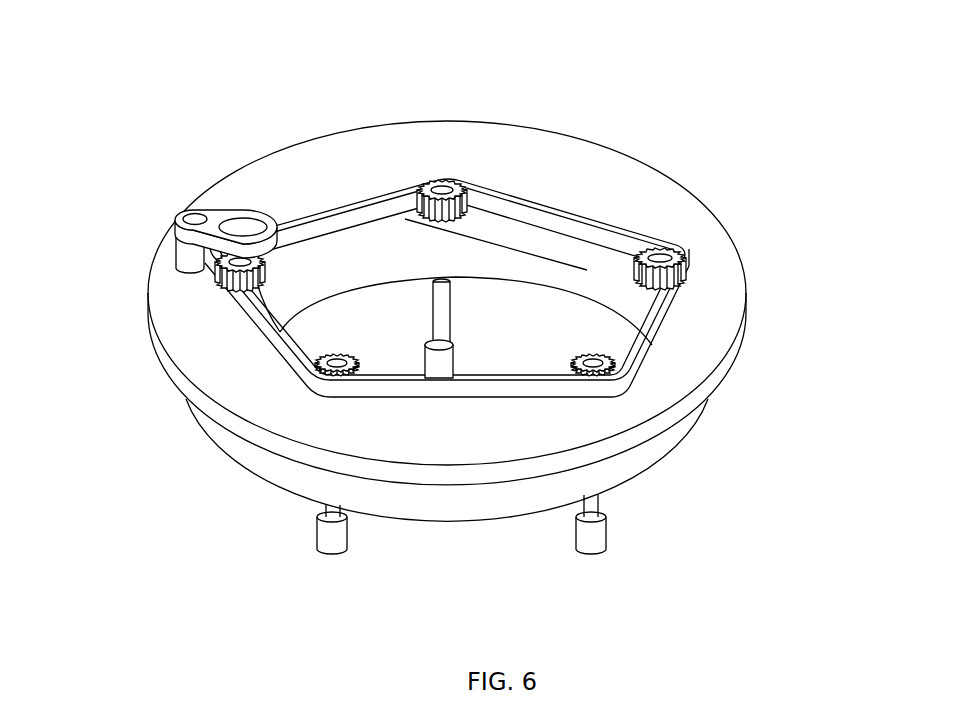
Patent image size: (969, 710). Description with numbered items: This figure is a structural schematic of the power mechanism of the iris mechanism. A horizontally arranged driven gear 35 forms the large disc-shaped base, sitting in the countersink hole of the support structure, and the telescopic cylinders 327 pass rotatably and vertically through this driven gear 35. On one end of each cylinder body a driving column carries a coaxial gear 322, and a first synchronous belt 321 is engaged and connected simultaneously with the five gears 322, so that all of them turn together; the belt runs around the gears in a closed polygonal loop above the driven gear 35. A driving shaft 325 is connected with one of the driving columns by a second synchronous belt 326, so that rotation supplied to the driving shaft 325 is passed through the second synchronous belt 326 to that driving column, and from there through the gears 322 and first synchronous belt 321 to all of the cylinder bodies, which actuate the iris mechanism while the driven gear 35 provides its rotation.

The driven gear 35 is at (670, 385).
The first synchronous belt 321 is at (680, 287).
The gear 322 is at (683, 247).
The driving shaft 325 is at (173, 233).
The second synchronous belt 326 is at (217, 215).
The telescopic cylinder 327 is at (443, 327).